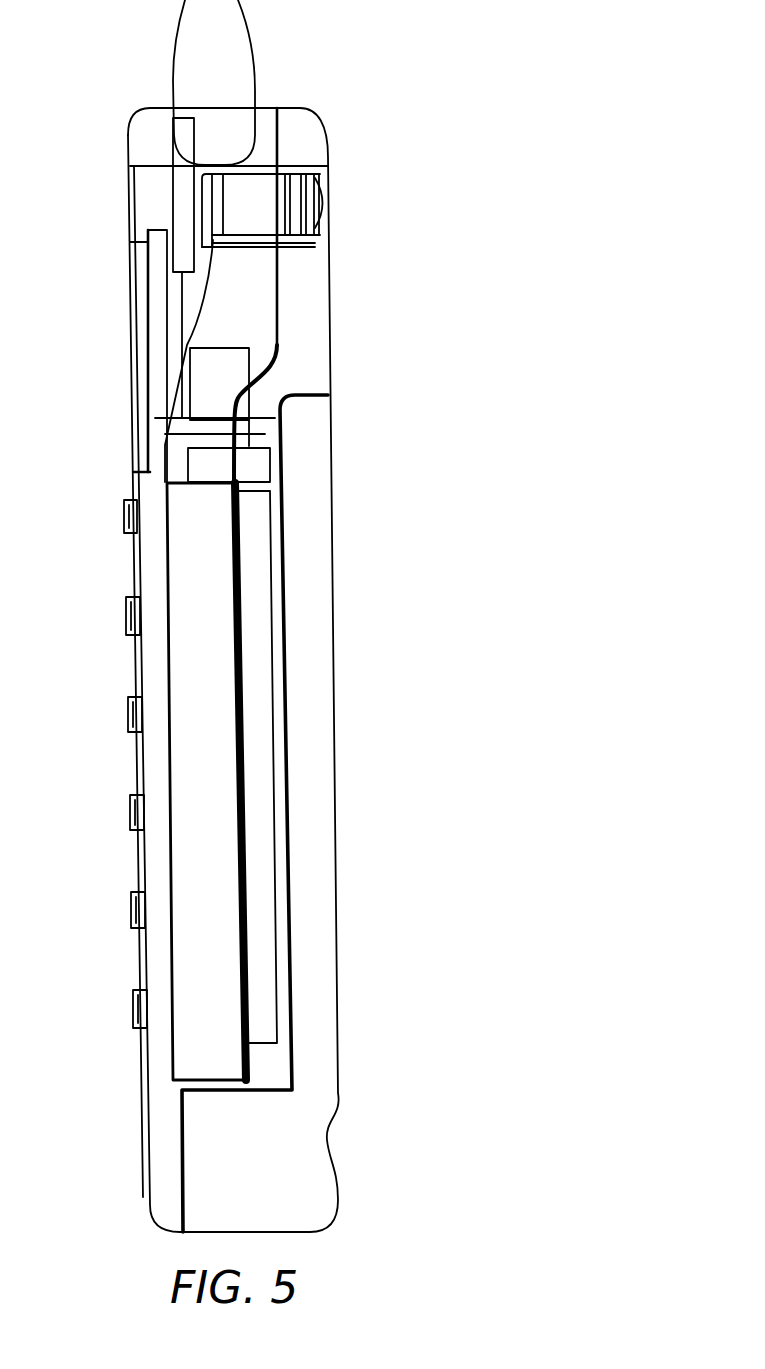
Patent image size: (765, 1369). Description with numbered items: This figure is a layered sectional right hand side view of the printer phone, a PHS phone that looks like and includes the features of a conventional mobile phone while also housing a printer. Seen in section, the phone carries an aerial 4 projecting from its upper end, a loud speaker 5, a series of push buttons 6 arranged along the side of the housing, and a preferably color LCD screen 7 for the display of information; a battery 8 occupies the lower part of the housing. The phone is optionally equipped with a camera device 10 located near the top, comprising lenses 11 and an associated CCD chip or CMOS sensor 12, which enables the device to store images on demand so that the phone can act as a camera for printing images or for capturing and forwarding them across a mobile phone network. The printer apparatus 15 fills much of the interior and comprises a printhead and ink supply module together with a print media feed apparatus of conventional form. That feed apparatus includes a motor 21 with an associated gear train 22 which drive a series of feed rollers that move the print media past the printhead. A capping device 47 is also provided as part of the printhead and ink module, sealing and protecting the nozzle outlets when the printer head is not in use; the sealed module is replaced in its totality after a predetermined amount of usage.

The aerial 4 is at (252, 40).
The loud speaker 5 is at (180, 190).
The push buttons 6 is at (127, 623).
The LCD screen 7 is at (150, 322).
The battery 8 is at (303, 1151).
The camera device 10 is at (339, 156).
The lenses 11 is at (305, 211).
The CCD chip or CMOS sensor 12 is at (227, 205).
The printer apparatus 15 is at (215, 977).
The motor 21 is at (223, 392).
The gear train 22 is at (257, 467).
The capping device 47 is at (262, 667).